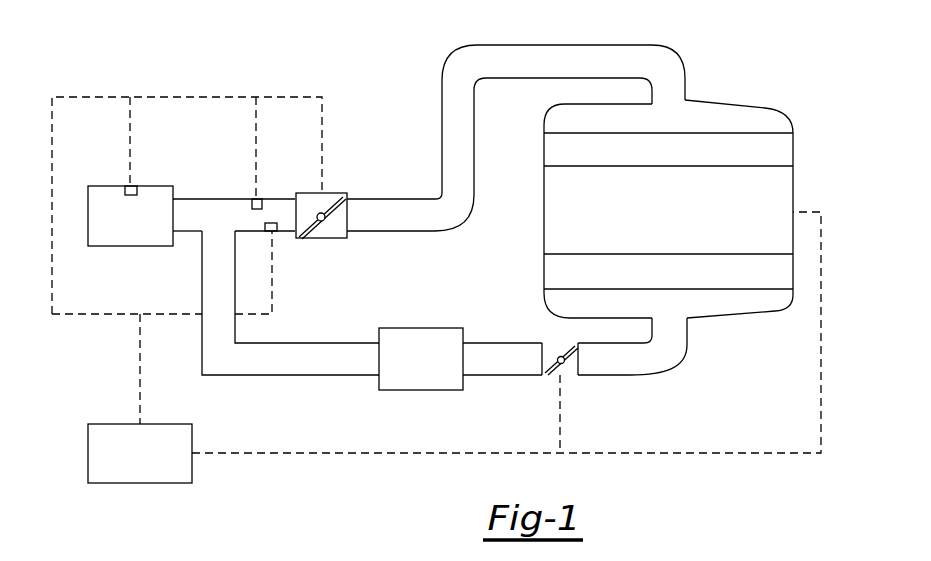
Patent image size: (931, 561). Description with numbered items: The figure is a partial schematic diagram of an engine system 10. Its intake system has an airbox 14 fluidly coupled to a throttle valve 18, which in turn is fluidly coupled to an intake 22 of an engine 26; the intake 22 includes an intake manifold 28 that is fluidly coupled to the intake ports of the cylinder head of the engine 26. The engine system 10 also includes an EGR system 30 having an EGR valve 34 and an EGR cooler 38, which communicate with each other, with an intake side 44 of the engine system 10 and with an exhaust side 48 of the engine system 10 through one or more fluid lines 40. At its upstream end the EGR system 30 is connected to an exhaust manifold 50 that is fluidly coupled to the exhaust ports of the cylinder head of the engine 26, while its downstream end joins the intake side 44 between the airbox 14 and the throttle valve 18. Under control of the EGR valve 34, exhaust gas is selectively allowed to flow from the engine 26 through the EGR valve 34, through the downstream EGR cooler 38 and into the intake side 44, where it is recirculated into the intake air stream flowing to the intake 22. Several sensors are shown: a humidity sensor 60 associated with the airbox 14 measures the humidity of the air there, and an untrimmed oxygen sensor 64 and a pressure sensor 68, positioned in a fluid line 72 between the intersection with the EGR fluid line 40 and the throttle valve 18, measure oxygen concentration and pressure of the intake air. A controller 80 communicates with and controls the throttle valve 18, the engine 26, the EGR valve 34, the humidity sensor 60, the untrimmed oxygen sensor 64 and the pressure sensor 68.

The engine system 10 is at (376, 58).
The airbox 14 is at (105, 186).
The throttle valve 18 is at (334, 193).
The intake 22 is at (708, 83).
The engine 26 is at (750, 217).
The intake manifold 28 is at (780, 145).
The EGR system 30 is at (593, 400).
The EGR valve 34 is at (565, 350).
The EGR cooler 38 is at (450, 390).
The fluid lines 40 is at (680, 355).
The intake side 44 is at (408, 163).
The exhaust side 48 is at (277, 387).
The exhaust manifold 50 is at (785, 280).
The humidity sensor 60 is at (132, 185).
The untrimmed oxygen sensor 64 is at (257, 198).
The pressure sensor 68 is at (277, 231).
The fluid line 72 is at (213, 198).
The controller 80 is at (167, 485).